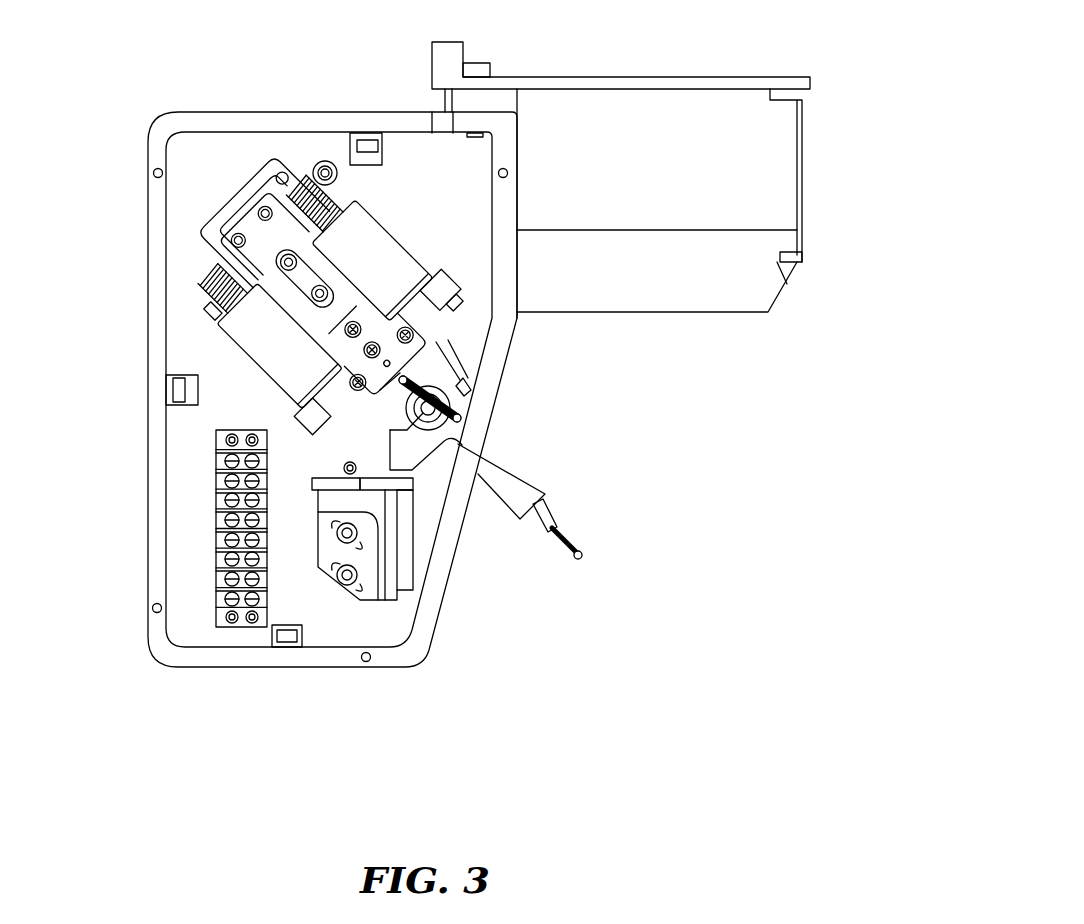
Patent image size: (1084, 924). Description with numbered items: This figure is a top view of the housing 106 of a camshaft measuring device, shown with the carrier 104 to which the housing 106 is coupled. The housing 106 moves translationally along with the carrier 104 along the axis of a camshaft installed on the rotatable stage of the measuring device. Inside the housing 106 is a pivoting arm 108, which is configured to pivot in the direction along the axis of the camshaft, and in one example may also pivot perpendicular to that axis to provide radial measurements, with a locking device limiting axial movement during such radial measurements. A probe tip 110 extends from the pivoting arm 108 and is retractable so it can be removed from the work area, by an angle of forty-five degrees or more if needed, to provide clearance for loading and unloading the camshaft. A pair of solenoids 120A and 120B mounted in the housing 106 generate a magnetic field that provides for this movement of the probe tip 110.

The carrier 104 is at (660, 99).
The housing 106 is at (146, 237).
The pivoting arm 108 is at (430, 371).
The probe tip 110 is at (565, 529).
The solenoid 120A is at (253, 330).
The solenoid 120B is at (392, 268).